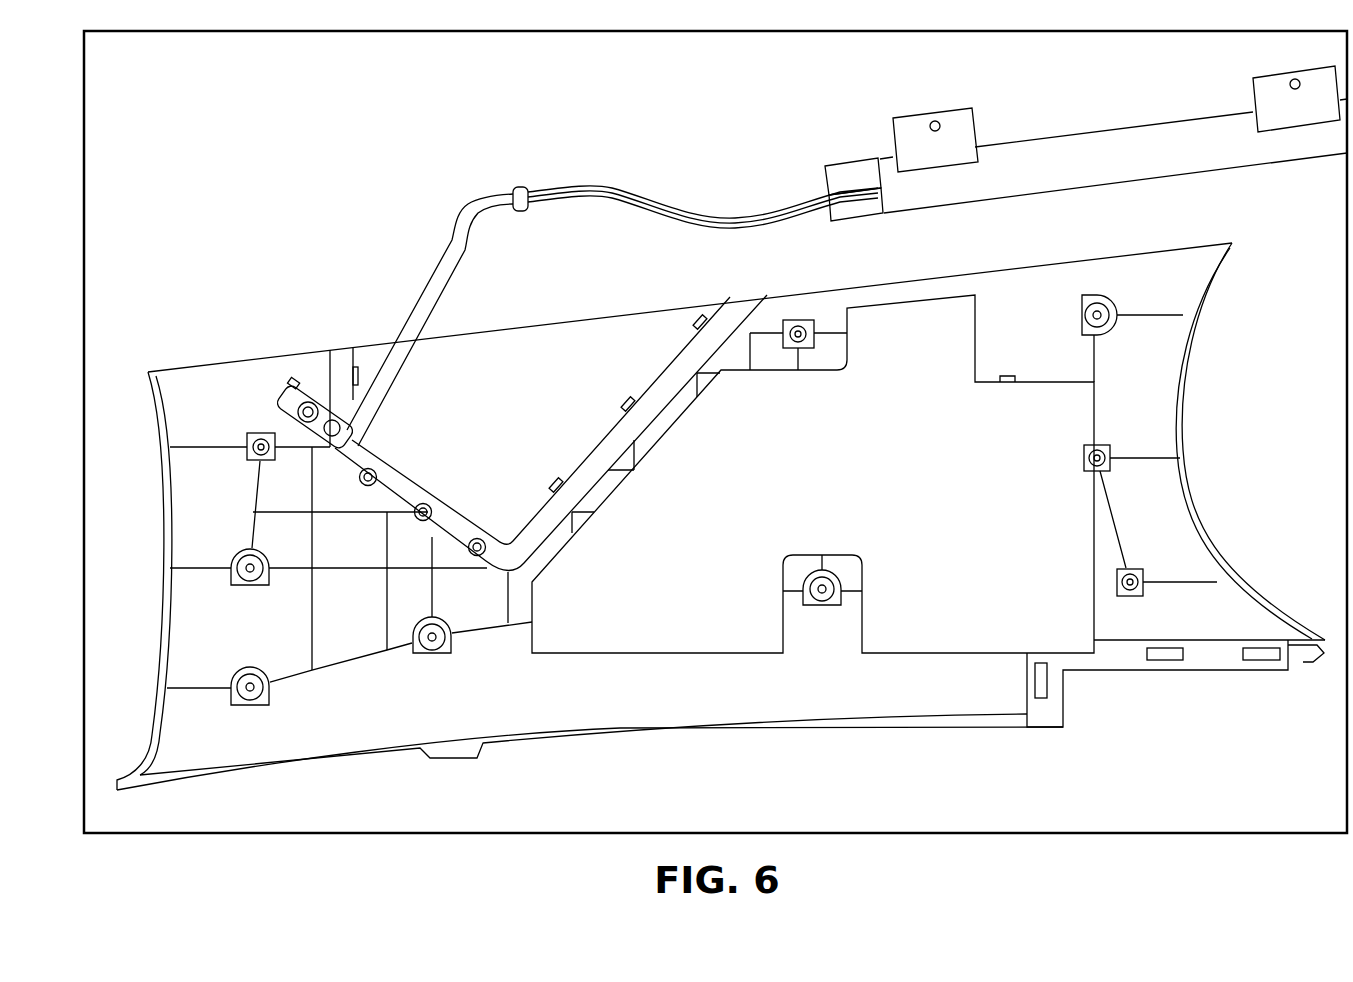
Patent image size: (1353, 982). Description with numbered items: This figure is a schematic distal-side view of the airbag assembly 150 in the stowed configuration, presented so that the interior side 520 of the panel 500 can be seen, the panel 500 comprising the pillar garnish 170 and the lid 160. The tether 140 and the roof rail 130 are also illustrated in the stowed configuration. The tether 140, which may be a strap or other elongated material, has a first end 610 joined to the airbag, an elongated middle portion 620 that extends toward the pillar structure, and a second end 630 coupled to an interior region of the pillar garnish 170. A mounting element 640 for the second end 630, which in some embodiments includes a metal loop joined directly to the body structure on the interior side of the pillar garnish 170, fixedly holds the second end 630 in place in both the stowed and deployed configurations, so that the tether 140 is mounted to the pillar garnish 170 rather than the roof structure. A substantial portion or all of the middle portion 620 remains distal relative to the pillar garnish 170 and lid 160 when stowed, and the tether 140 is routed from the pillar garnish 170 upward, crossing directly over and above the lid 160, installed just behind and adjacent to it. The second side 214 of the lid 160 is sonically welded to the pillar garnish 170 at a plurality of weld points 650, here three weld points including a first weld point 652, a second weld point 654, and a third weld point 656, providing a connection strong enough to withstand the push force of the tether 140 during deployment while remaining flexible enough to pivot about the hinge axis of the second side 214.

The roof rail 130 is at (1111, 131).
The tether 140 is at (492, 196).
The assembly 150 is at (395, 228).
The lid 160 is at (574, 399).
The pillar garnish 170 is at (915, 488).
The second side 214 is at (405, 480).
The panel 500 is at (1229, 348).
The interior side 520 is at (380, 715).
The first end 610 is at (876, 169).
The middle portion 620 is at (644, 203).
The second end 630 is at (346, 395).
The mounting element 640 is at (286, 372).
The weld points 650 is at (333, 490).
The first weld point 652 is at (368, 470).
The second weld point 654 is at (423, 505).
The third weld point 656 is at (478, 540).